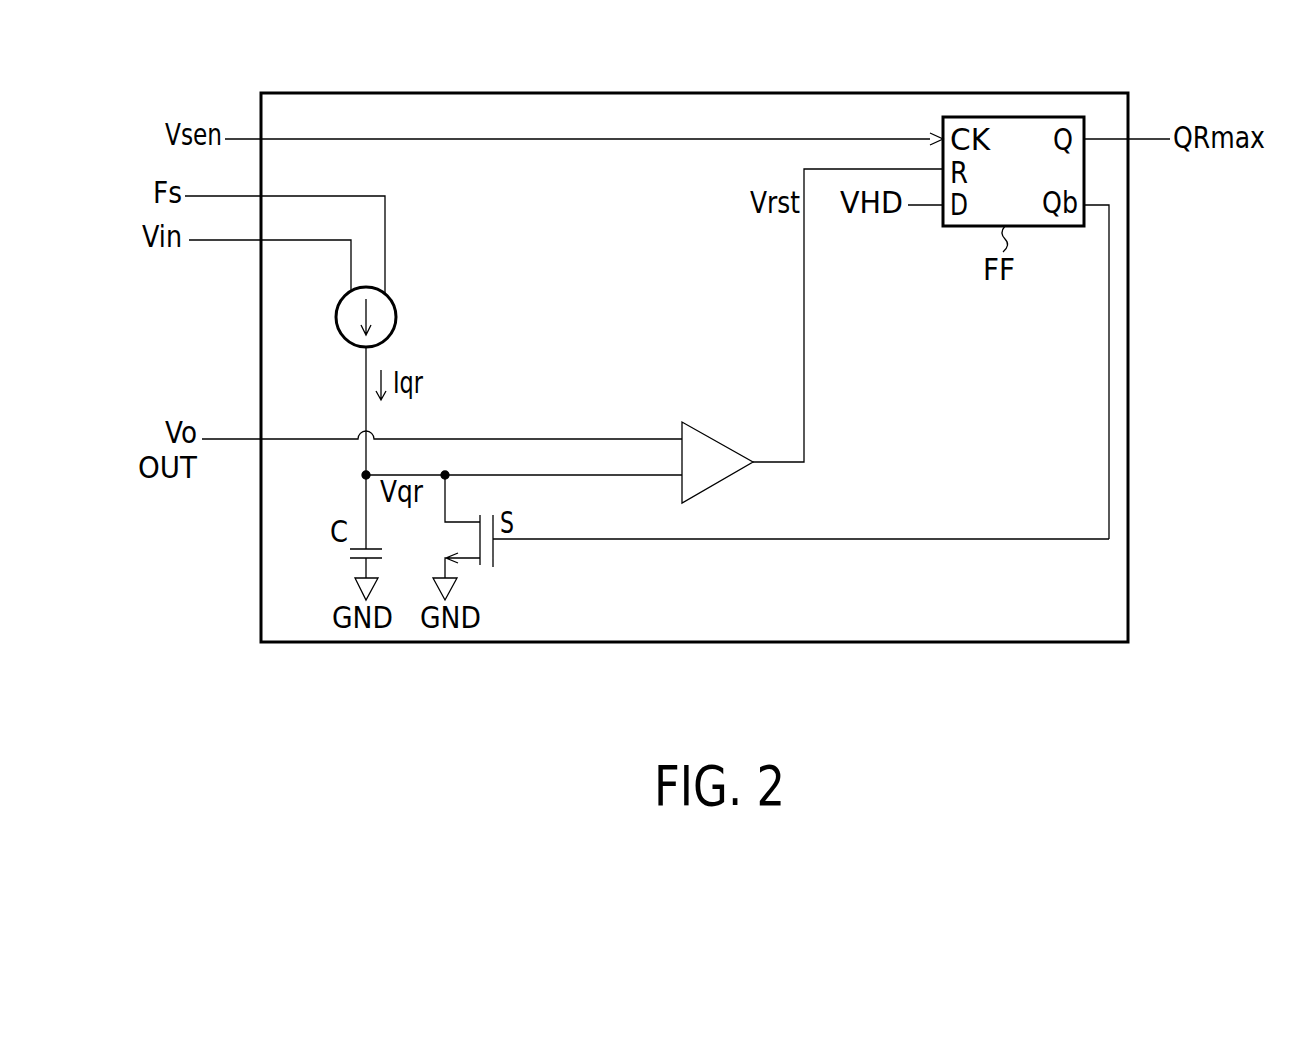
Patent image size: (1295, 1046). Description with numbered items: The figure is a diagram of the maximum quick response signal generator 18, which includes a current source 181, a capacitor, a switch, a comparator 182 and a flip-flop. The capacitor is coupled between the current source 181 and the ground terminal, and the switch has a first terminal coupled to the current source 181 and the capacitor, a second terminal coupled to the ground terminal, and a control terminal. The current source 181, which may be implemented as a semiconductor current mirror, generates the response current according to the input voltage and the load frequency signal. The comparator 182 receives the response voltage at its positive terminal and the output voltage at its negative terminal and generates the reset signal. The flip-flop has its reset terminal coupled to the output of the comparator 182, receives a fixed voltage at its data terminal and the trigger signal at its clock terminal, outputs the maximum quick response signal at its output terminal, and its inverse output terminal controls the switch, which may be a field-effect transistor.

The maximum quick response signal generator 18 is at (1128, 596).
The current source 181 is at (397, 317).
The comparator 182 is at (718, 438).